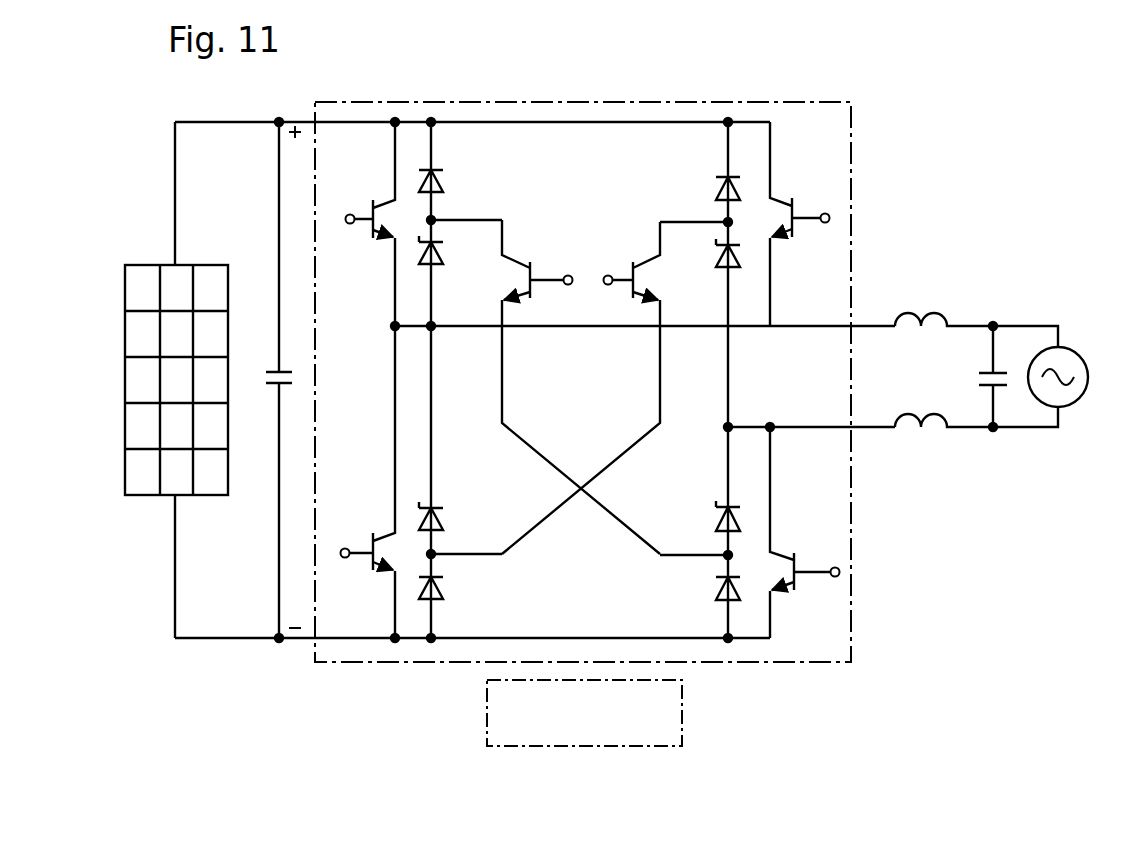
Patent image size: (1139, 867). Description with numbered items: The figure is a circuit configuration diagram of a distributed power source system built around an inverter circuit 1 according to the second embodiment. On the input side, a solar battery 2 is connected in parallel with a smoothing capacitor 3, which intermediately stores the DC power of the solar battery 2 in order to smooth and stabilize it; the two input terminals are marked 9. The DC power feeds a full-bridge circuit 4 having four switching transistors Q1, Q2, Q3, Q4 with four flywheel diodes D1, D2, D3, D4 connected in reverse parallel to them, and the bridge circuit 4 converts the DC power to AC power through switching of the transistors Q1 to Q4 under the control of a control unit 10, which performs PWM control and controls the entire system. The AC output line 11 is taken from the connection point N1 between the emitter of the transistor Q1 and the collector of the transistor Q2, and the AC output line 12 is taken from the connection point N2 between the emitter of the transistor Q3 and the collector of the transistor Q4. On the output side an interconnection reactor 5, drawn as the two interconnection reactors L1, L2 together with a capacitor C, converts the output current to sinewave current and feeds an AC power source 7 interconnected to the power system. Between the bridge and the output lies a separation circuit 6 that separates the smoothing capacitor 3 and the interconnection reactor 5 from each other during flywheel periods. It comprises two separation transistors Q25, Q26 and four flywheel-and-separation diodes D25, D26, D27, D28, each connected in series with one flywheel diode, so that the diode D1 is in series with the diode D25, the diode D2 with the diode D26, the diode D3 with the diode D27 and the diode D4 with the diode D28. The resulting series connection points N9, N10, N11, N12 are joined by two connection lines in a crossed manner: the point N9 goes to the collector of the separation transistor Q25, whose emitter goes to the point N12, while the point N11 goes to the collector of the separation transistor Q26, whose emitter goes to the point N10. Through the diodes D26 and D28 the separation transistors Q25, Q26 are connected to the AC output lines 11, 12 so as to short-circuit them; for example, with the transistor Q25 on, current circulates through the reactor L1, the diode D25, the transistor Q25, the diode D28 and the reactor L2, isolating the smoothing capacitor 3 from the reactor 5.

The inverter circuit 1 is at (762, 101).
The solar battery 2 is at (156, 264).
The smoothing capacitor 3 is at (274, 369).
The bridge circuit 4 is at (594, 110).
The interconnection reactor 5 is at (951, 358).
The separation circuit 6 is at (581, 344).
The AC power source 7 is at (1074, 346).
The DC input terminals 9 is at (283, 118).
The control unit 10 is at (684, 711).
The AC output line 11 is at (794, 324).
The AC output line 12 is at (794, 425).
The transistor Q1 is at (370, 224).
The transistor Q2 is at (368, 482).
The transistor Q3 is at (800, 224).
The transistor Q4 is at (805, 532).
The separation transistor Q25 is at (581, 387).
The separation transistor Q26 is at (581, 388).
The flywheel diode D1 is at (449, 171).
The flywheel diode D2 is at (454, 596).
The flywheel diode D3 is at (709, 172).
The flywheel diode D4 is at (710, 596).
The flywheel-and-separation diode D25 is at (456, 273).
The flywheel-and-separation diode D26 is at (458, 440).
The flywheel-and-separation diode D27 is at (703, 324).
The flywheel-and-separation diode D28 is at (700, 491).
The connection point N1 is at (603, 328).
The connection point N2 is at (787, 444).
The series connection point N9 is at (435, 217).
The series connection point N10 is at (435, 557).
The series connection point N11 is at (724, 222).
The series connection point N12 is at (724, 557).
The interconnection reactor L1 is at (944, 306).
The interconnection reactor L2 is at (944, 441).
The capacitor C is at (981, 376).